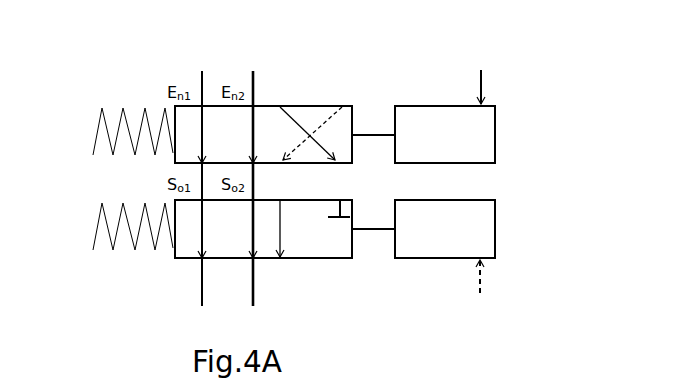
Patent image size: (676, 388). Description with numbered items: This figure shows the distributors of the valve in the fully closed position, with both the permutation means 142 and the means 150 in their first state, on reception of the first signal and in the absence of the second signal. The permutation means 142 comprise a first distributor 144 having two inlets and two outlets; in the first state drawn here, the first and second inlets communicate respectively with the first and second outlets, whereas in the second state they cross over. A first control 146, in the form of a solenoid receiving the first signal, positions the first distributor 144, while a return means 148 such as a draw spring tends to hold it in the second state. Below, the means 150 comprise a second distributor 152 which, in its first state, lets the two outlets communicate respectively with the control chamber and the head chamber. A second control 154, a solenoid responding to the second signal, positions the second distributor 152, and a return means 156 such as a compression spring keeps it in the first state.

The permutation means 142 is at (149, 97).
The first distributor 144 is at (263, 104).
The first control 146 is at (498, 103).
The return means 148 is at (130, 148).
The means 150 is at (152, 273).
The second distributor 152 is at (302, 260).
The second control 154 is at (498, 261).
The return means 156 is at (130, 242).